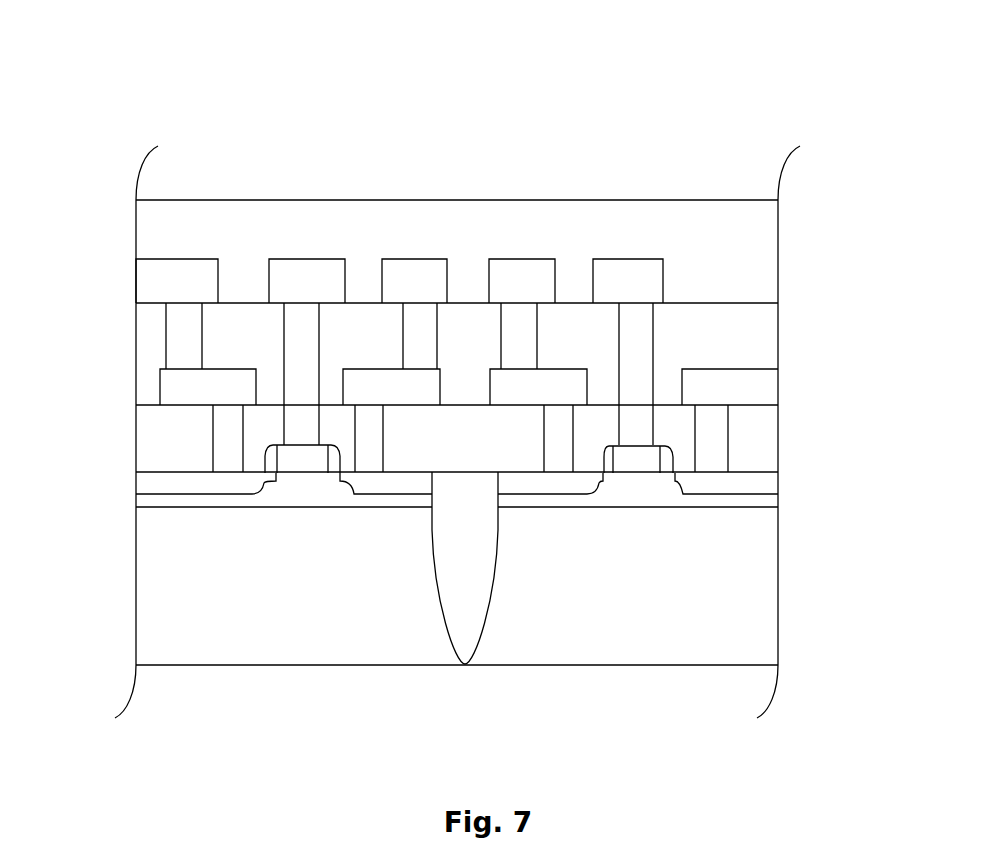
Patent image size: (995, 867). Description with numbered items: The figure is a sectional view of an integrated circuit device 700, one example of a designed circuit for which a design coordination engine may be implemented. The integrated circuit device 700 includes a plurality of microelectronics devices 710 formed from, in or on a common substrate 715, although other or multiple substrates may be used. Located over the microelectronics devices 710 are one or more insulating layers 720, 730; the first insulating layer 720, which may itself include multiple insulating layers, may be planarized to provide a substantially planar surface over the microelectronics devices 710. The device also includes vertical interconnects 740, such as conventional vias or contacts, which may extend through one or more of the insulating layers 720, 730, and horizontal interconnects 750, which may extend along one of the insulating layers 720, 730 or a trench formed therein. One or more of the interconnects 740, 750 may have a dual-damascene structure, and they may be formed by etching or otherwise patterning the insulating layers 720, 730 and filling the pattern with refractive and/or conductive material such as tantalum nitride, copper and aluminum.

The integrated circuit device 700 is at (106, 71).
The microelectronics devices 710 is at (355, 525).
The substrate 715 is at (770, 605).
The first insulating layer 720 is at (148, 433).
The insulating layer 730 is at (770, 215).
The vertical interconnects 740 is at (308, 322).
The horizontal interconnects 750 is at (283, 277).